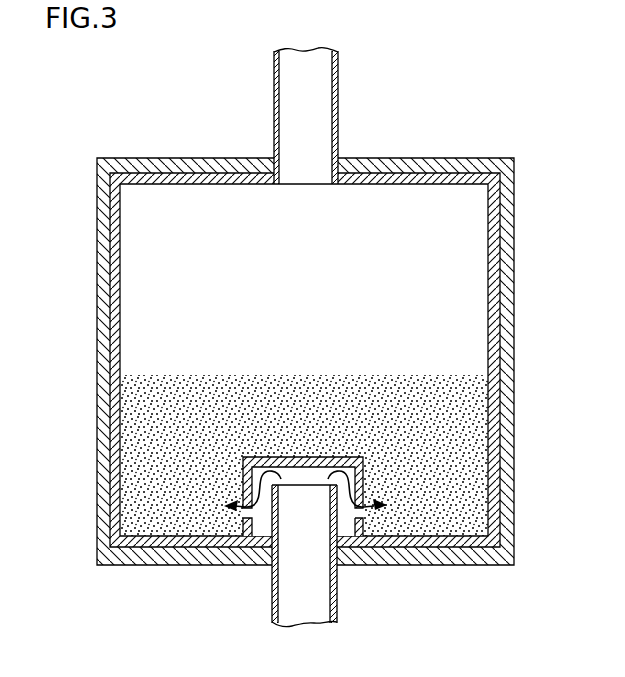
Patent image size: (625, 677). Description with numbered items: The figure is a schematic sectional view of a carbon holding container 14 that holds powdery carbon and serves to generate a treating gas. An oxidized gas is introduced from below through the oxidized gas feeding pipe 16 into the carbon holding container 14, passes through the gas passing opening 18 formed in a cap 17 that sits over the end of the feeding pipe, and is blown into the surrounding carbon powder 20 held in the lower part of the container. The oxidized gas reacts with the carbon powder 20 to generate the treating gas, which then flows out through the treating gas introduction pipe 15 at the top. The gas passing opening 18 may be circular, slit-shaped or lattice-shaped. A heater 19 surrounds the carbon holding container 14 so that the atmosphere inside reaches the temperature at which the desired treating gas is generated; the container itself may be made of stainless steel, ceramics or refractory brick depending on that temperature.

The carbon holding container 14 is at (495, 293).
The treating gas introduction pipe 15 is at (338, 104).
The oxidized gas feeding pipe 16 is at (338, 594).
The cap 17 is at (364, 480).
The gas passing opening 18 is at (236, 510).
The heater 19 is at (505, 228).
The carbon powder 20 is at (453, 428).